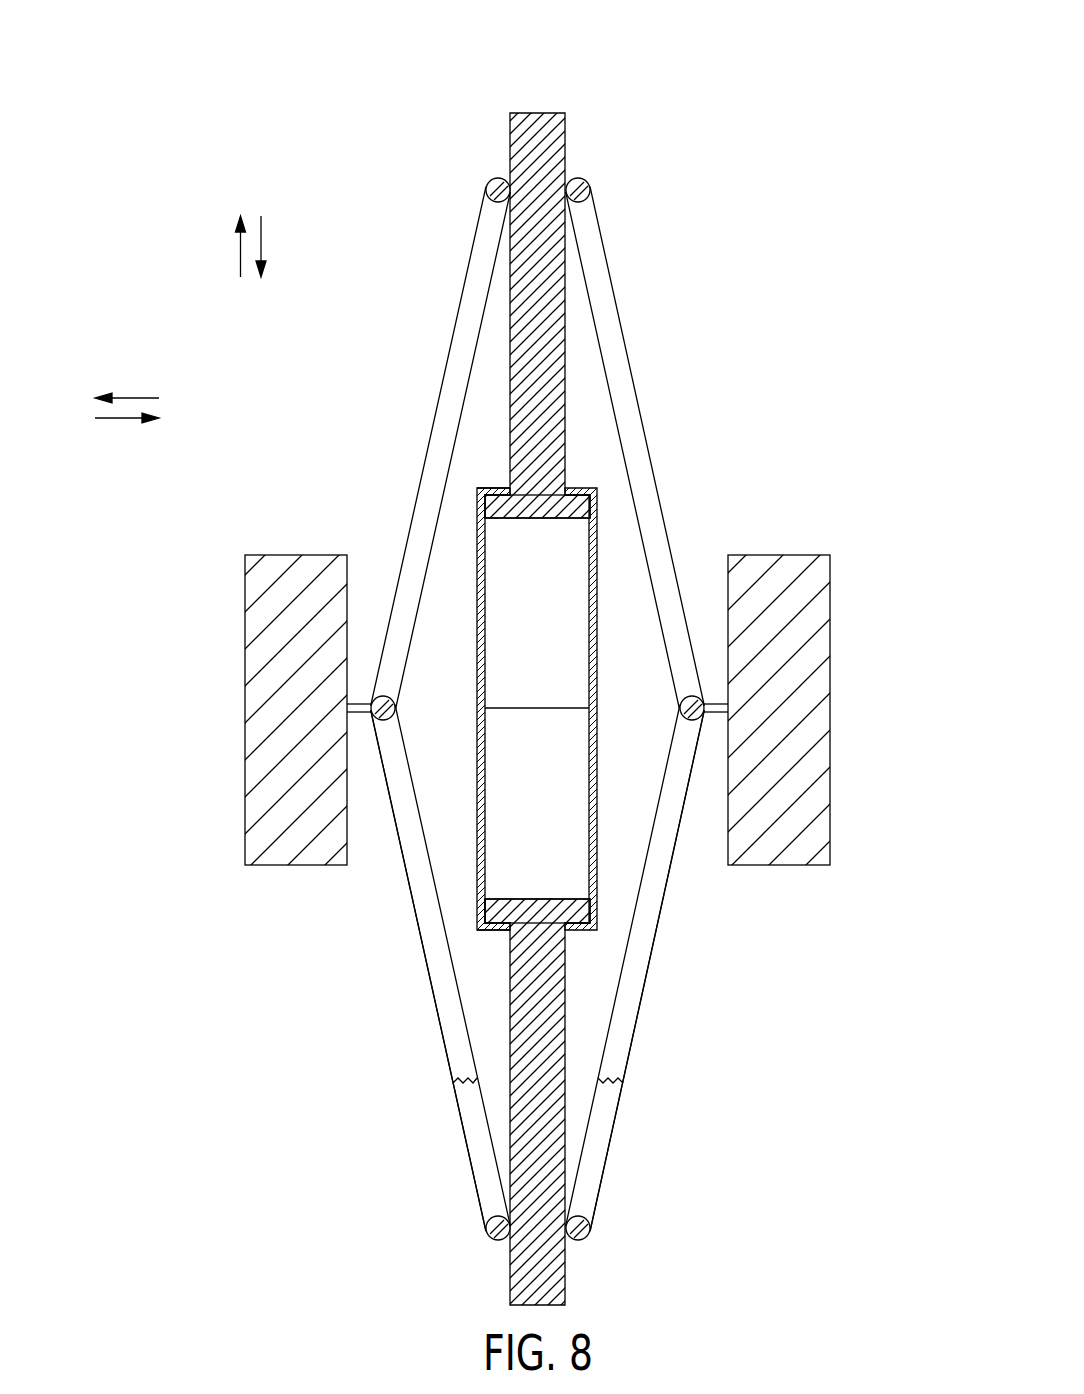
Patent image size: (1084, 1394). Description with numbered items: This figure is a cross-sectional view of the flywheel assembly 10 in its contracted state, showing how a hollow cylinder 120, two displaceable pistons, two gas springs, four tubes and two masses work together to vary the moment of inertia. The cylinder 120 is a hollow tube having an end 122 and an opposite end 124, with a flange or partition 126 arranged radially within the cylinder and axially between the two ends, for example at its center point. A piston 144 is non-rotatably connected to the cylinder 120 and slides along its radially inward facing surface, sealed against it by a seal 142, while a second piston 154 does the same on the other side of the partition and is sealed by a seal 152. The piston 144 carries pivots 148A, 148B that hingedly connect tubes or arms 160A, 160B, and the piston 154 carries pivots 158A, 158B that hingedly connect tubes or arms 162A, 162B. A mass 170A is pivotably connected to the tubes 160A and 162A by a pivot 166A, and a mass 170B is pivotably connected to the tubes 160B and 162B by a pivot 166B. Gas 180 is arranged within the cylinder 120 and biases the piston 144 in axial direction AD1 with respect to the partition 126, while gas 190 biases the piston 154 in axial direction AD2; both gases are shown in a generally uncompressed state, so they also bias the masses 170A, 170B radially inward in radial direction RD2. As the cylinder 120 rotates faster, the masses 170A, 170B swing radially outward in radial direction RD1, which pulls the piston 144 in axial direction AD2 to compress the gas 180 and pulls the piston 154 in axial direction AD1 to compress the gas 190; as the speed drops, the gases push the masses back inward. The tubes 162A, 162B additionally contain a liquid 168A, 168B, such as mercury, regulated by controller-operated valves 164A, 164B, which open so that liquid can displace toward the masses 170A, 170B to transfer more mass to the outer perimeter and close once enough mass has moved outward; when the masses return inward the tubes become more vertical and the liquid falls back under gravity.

The flywheel assembly 10 is at (244, 91).
The axial direction AD1 is at (240, 263).
The axial direction AD2 is at (268, 232).
The radial direction RD1 is at (135, 396).
The radial direction RD2 is at (124, 419).
The cylinder 120 is at (597, 547).
The end 122 is at (492, 486).
The end 124 is at (495, 930).
The partition 126 is at (586, 708).
The seal 142 is at (597, 503).
The piston 144 is at (557, 317).
The pivot 148A is at (487, 186).
The pivot 148B is at (589, 186).
The seal 152 is at (587, 903).
The piston 154 is at (553, 965).
The pivot 158A is at (488, 1236).
The pivot 158B is at (588, 1236).
The tube 160A is at (465, 348).
The tube 160B is at (625, 358).
The tube 162A is at (422, 903).
The tube 162B is at (657, 878).
The valve 164A is at (457, 1066).
The valve 164B is at (607, 1066).
The pivot 166A is at (387, 700).
The pivot 166B is at (688, 700).
The liquid 168A is at (462, 1138).
The liquid 168B is at (612, 1133).
The mass 170A is at (256, 699).
The mass 170B is at (817, 697).
The gas 180 is at (511, 609).
The gas 190 is at (511, 762).